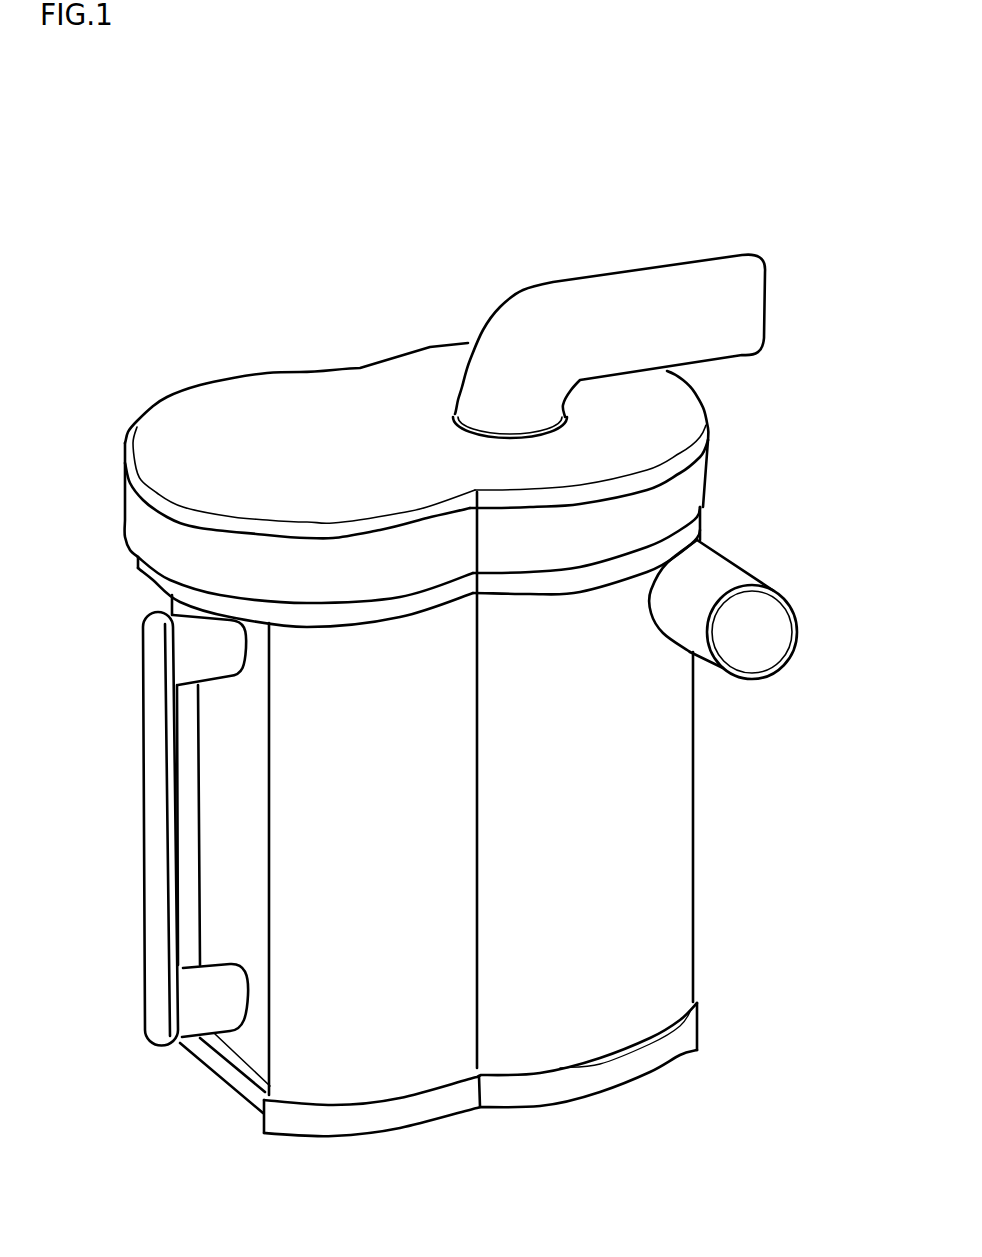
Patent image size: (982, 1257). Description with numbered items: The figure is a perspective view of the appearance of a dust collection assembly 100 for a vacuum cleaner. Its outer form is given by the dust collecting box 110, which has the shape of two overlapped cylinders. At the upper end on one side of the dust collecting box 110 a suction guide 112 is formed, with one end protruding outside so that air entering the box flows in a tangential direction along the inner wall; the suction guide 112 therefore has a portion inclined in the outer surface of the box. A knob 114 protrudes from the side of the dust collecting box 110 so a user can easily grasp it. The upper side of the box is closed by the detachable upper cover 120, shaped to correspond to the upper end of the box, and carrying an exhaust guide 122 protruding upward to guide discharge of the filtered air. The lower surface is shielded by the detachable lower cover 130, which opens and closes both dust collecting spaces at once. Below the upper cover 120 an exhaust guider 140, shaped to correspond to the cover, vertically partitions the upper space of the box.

The dust collection assembly 100 is at (320, 303).
The dust collecting box 110 is at (694, 840).
The suction guide 112 is at (797, 627).
The knob 114 is at (157, 822).
The upper cover 120 is at (272, 402).
The exhaust guide 122 is at (627, 307).
The lower cover 130 is at (605, 1083).
The exhaust guider 140 is at (138, 505).